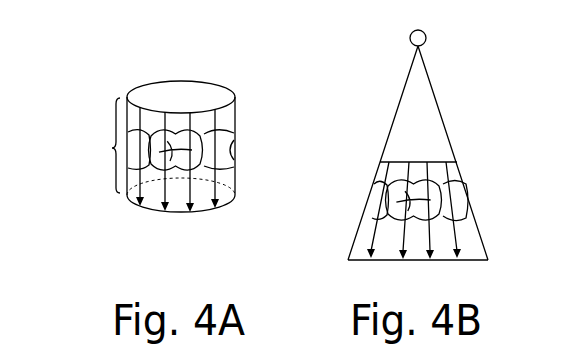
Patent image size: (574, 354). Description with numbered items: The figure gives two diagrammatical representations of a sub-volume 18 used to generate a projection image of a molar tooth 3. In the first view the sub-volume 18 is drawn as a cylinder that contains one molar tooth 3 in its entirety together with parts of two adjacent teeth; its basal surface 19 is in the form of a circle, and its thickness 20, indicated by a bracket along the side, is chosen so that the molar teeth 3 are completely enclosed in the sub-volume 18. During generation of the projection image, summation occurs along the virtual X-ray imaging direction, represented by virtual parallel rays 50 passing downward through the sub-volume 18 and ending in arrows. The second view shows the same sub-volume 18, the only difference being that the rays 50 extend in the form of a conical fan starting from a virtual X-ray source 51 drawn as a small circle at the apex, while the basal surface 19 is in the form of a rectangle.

In FIG. 4A, the molar tooth 3 is at (216, 142).
In FIG. 4B, the molar tooth 3 is at (460, 207).
In FIG. 4A, the sub-volume 18 is at (236, 105).
In FIG. 4B, the sub-volume 18 is at (450, 170).
In FIG. 4A, the basal surface 19 is at (200, 97).
In FIG. 4B, the basal surface 19 is at (432, 158).
In FIG. 4A, the thickness 20 is at (112, 148).
In FIG. 4A, the virtual rays 50 is at (193, 113).
In FIG. 4B, the virtual rays 50 is at (430, 238).
In FIG. 4B, the virtual X-ray source 51 is at (426, 37).